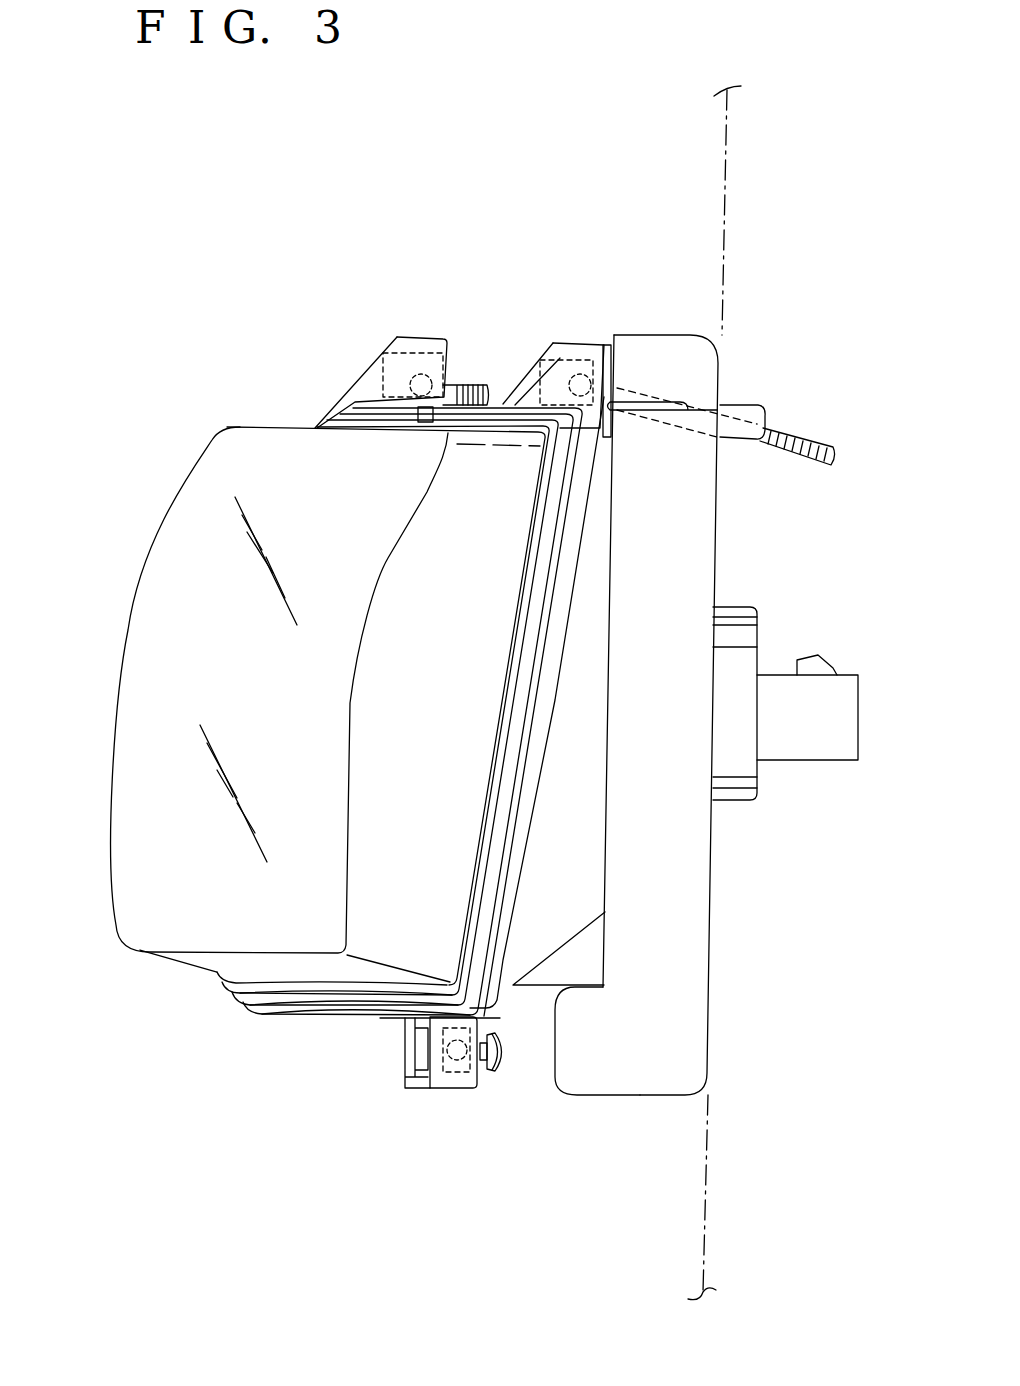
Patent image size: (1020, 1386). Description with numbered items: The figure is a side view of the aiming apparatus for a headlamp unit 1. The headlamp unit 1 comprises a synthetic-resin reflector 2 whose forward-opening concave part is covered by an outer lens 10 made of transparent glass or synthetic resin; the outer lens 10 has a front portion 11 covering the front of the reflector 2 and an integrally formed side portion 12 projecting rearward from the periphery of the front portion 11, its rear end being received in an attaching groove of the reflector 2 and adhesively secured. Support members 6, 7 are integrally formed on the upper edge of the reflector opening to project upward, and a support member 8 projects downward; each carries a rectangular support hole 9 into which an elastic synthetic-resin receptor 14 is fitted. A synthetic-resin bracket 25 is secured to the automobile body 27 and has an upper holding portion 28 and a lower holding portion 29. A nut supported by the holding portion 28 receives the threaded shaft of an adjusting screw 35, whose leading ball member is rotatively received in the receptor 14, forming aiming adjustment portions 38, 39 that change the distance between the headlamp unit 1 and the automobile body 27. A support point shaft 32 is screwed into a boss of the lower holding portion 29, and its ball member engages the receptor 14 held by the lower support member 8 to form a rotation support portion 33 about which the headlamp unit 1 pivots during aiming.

The headlamp unit 1 is at (204, 260).
The reflector 2 is at (494, 405).
The support member 6 is at (593, 343).
The support member 7 is at (427, 338).
The support member 8 is at (446, 1090).
The support hole 9 is at (381, 350).
The outer lens 10 is at (143, 848).
The front portion 11 is at (165, 902).
The side portion 12 is at (400, 903).
The receptor 14 is at (435, 340).
The bracket 25 is at (718, 517).
The automobile body 27 is at (723, 130).
The holding portion 28 is at (723, 377).
The holding portion 29 is at (625, 1097).
The support point shaft 32 is at (510, 1075).
The rotation support portion 33 is at (468, 1142).
The adjusting screw 35 is at (482, 378).
The aiming adjustment portion 38 is at (620, 318).
The aiming adjustment portion 39 is at (349, 311).